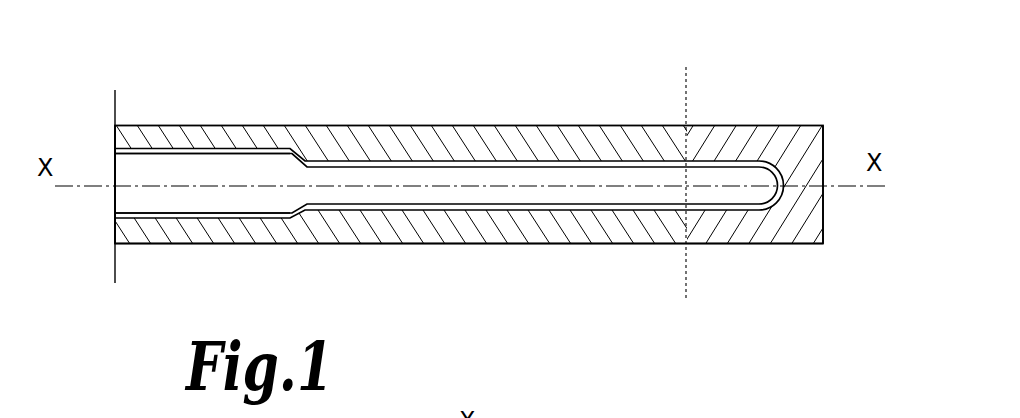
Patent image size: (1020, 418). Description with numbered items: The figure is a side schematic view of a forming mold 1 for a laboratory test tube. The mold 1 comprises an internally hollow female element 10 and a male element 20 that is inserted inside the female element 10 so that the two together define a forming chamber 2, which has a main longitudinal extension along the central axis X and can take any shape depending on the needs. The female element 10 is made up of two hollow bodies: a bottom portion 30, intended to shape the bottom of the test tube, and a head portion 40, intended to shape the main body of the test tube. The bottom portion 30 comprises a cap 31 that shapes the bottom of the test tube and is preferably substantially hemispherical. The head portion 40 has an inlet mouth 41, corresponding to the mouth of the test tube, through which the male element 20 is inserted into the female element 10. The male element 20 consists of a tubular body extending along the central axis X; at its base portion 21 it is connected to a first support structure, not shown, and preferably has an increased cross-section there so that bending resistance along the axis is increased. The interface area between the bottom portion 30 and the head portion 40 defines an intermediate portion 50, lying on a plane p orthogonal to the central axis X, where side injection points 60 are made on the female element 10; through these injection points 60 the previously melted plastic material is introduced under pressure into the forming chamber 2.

The forming mold 1 is at (590, 68).
The female element 10 is at (475, 127).
The forming chamber 2 is at (407, 163).
The male element 20 is at (359, 195).
The base portion 21 is at (173, 199).
The bottom portion 30 is at (800, 127).
The cap 31 is at (781, 214).
The head portion 40 is at (475, 244).
The inlet mouth 41 is at (128, 146).
The intermediate portion 50 is at (704, 103).
The injection points 60 is at (695, 157).